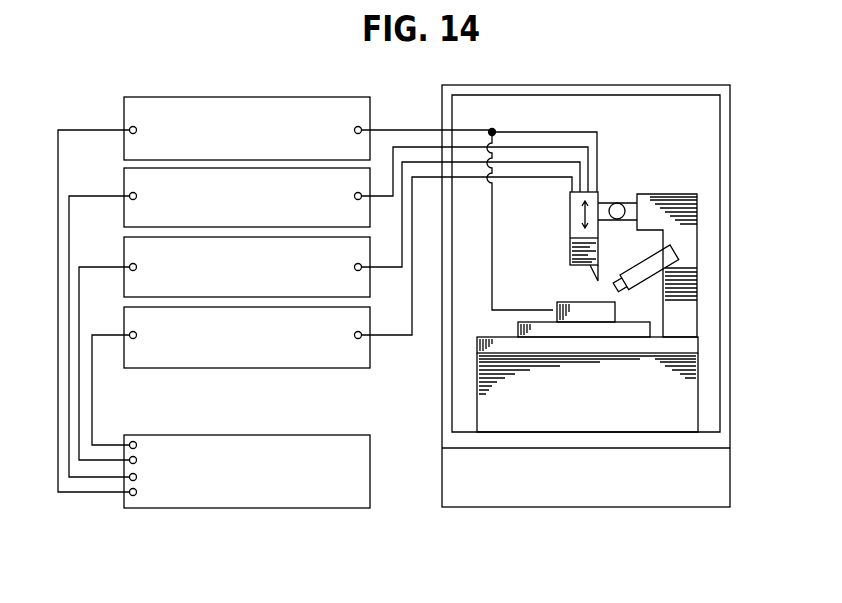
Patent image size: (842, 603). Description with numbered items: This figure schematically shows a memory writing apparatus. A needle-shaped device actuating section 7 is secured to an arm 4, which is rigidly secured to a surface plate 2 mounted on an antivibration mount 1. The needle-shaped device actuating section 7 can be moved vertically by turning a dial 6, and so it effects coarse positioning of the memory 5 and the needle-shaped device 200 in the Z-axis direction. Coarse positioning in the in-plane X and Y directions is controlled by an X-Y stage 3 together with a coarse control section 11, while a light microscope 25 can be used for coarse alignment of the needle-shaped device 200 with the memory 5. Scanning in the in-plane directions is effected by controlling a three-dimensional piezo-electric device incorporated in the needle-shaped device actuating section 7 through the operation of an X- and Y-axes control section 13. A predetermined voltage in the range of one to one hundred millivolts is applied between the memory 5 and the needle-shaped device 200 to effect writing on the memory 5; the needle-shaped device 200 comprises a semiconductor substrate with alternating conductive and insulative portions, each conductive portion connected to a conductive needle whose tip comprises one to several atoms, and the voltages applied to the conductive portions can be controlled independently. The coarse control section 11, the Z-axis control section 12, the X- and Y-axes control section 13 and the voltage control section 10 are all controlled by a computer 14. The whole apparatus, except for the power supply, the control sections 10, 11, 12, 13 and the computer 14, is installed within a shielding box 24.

The antivibration mount 1 is at (587, 392).
The surface plate 2 is at (687, 345).
The X-Y stage 3 is at (642, 328).
The arm 4 is at (693, 273).
The memory 5 is at (608, 312).
The dial 6 is at (620, 203).
The needle-shaped device actuating section 7 is at (570, 204).
The voltage control section 10 is at (122, 112).
The coarse control section 11 is at (122, 180).
The Z-axis control section 12 is at (122, 250).
The X- and Y-axes control section 13 is at (122, 318).
The computer 14 is at (188, 433).
The shielding box 24 is at (633, 84).
The light microscope 25 is at (668, 255).
The needle-shaped device 200 is at (592, 268).